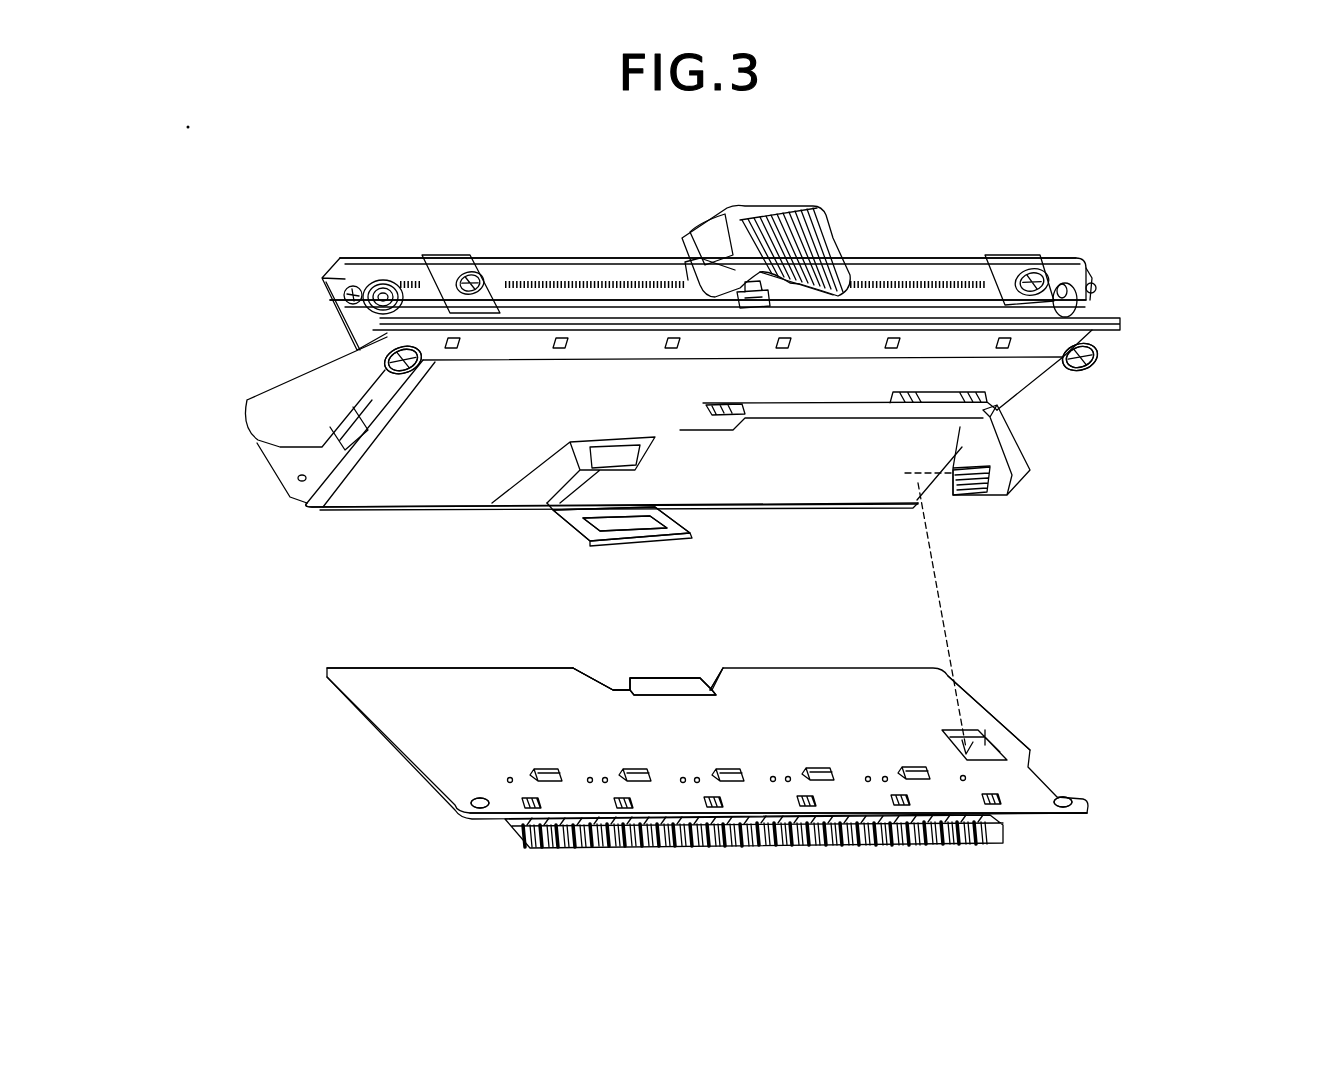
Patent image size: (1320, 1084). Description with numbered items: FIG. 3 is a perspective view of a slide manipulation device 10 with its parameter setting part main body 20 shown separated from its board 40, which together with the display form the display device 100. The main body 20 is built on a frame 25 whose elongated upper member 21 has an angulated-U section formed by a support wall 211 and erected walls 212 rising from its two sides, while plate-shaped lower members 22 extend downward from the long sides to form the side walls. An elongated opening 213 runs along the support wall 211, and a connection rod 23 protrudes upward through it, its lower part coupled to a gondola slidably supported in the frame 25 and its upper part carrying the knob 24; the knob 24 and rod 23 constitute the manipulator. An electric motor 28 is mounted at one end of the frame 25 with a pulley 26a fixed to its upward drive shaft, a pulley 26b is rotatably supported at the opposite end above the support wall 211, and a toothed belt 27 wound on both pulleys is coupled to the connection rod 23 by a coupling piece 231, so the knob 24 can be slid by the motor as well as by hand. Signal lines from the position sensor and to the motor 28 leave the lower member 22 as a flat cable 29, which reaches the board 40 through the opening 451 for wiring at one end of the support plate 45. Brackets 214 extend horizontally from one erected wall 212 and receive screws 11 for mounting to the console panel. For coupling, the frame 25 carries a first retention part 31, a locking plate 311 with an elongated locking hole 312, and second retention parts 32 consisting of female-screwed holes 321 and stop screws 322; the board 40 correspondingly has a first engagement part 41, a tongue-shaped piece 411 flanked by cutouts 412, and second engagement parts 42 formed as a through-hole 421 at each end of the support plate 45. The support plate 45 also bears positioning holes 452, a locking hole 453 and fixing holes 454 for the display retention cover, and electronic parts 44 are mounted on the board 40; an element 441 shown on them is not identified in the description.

The slide manipulation device 10 is at (1098, 563).
The parameter setting part main body 20 is at (1022, 505).
The upper member 21 is at (165, 215).
The support wall 211 is at (325, 292).
The erected walls 212 is at (343, 299).
The elongated opening 213 is at (620, 300).
The brackets 214 is at (998, 255).
The screws 11 is at (1036, 270).
The lower members 22 is at (346, 508).
The connection rod 23 is at (752, 308).
The knob 24 is at (770, 207).
The coupling piece 231 is at (672, 260).
The frame 25 is at (238, 487).
The pulley 26a is at (372, 282).
The pulley 26b is at (1078, 285).
The toothed belt 27 is at (548, 281).
The electric motor 28 is at (263, 412).
The flat cable 29 is at (1014, 441).
The first retention part 31 is at (455, 527).
The locking plate 311 is at (556, 516).
The elongated locking hole 312 is at (598, 523).
The second retention parts 32 is at (148, 330).
The female-screwed holes 321 is at (1095, 345).
The stop screws 322 is at (1098, 362).
The board 40 is at (1070, 668).
The first engagement part 41 is at (790, 600).
The tongue-shaped piece 411 is at (670, 678).
The cutouts 412 is at (716, 682).
The second engagement parts 42 is at (771, 802).
The through-hole 421 is at (1072, 797).
The electronic parts 44 is at (983, 855).
The terminals 441 is at (898, 836).
The support plate 45 is at (973, 712).
The opening for wiring 451 is at (983, 755).
The positioning holes 452 is at (507, 780).
The locking hole 453 is at (545, 772).
The fixing holes 454 is at (526, 806).
The display device 100 is at (1090, 845).